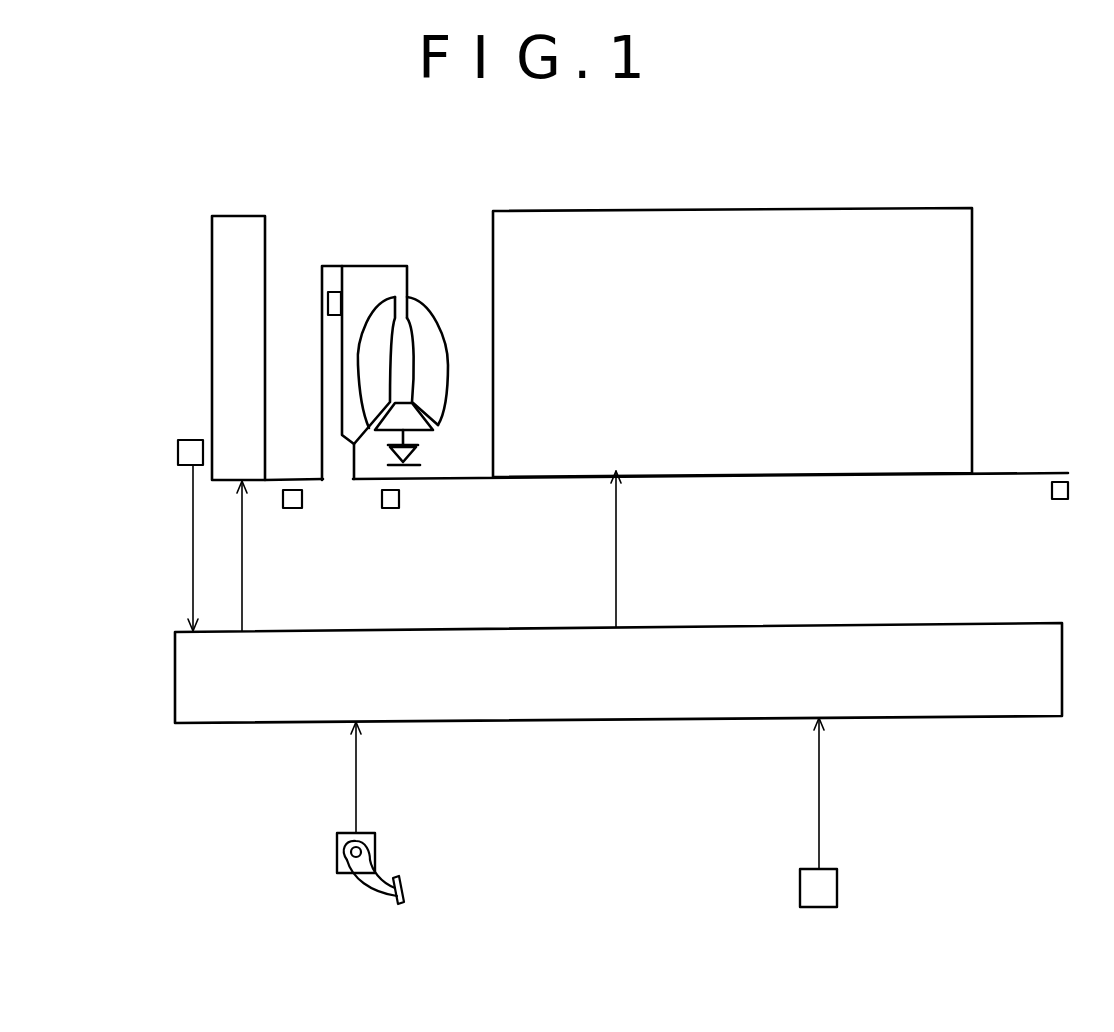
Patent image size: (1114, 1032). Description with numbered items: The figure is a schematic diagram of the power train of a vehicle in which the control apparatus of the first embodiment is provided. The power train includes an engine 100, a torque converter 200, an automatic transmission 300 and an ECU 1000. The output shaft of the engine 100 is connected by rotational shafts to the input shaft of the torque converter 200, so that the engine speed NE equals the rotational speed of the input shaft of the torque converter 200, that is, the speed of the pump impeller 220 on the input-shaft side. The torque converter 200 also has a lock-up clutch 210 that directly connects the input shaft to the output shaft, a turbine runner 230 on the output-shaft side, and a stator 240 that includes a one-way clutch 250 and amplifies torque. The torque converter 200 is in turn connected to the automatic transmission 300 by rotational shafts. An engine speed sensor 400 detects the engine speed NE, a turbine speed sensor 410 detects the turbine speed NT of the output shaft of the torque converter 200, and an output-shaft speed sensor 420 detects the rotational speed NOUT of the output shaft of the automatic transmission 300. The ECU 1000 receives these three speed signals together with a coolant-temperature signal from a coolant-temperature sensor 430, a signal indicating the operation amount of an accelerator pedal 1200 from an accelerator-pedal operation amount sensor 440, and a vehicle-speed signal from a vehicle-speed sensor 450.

The engine 100 is at (237, 215).
The torque converter 200 is at (424, 295).
The lock-up clutch 210 is at (338, 288).
The pump impeller 220 is at (440, 424).
The turbine runner 230 is at (378, 306).
The stator 240 is at (385, 436).
The one-way clutch 250 is at (418, 453).
The automatic transmission 300 is at (732, 211).
The engine speed sensor 400 is at (297, 509).
The turbine speed sensor 410 is at (390, 509).
The output-shaft speed sensor 420 is at (1053, 490).
The coolant-temperature sensor 430 is at (180, 466).
The accelerator-pedal operation amount sensor 440 is at (368, 833).
The vehicle-speed sensor 450 is at (825, 869).
The ECU 1000 is at (595, 723).
The accelerator pedal 1200 is at (390, 874).